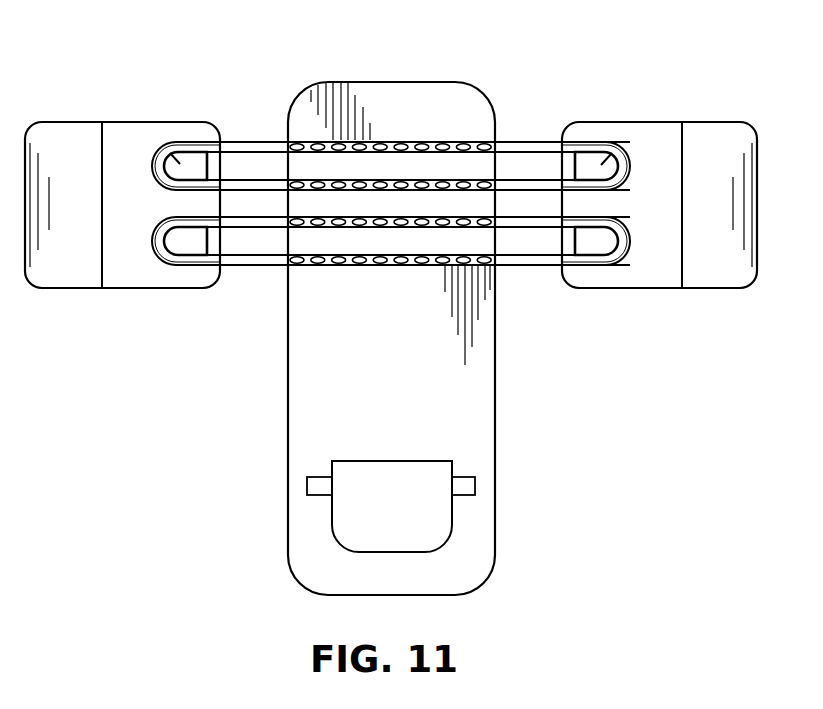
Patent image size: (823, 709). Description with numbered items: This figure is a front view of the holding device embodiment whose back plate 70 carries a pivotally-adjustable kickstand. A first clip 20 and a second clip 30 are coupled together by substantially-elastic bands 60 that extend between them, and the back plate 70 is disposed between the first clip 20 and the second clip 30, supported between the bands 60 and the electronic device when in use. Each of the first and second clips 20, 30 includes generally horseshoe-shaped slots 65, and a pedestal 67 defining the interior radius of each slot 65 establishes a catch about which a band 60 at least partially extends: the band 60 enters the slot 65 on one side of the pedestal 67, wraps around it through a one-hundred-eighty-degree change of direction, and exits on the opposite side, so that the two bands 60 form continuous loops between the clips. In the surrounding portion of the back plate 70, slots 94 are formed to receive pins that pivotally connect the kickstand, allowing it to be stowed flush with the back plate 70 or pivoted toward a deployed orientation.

The first clip 20 is at (724, 108).
The second clip 30 is at (57, 108).
The substantially-elastic band 60 is at (245, 142).
The horseshoe-shaped slot 65 is at (193, 142).
The pedestal 67 is at (171, 153).
The back plate 70 is at (363, 358).
The slot 94 is at (312, 486).